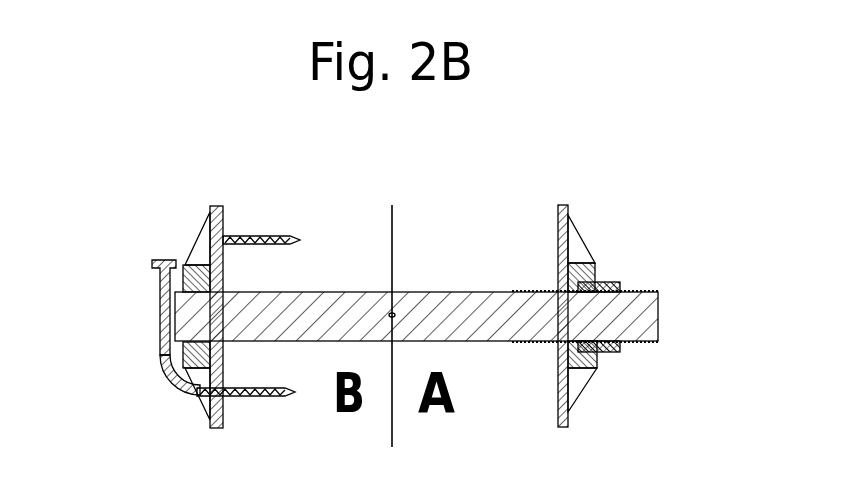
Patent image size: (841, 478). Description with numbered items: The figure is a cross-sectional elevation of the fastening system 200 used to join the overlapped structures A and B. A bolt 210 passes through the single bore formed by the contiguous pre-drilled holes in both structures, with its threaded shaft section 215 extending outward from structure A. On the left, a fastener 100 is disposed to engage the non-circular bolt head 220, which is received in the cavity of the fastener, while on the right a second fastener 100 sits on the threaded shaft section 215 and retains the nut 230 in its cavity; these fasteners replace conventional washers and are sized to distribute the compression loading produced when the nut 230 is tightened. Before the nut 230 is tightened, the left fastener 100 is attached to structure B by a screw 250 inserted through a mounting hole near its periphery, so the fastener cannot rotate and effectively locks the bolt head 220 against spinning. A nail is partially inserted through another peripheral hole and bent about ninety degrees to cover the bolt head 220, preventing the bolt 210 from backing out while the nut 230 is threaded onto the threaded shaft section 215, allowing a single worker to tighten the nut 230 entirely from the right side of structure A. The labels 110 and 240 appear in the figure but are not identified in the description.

The fastener 100 is at (177, 240).
The fastening screw 110 is at (237, 215).
The fastening system 200 is at (185, 183).
The bolt 210 is at (460, 298).
The threaded shaft section 215 is at (640, 288).
The bolt head 220 is at (147, 302).
The nut 230 is at (612, 357).
The curved flange 240 is at (167, 385).
The screw 250 is at (215, 241).